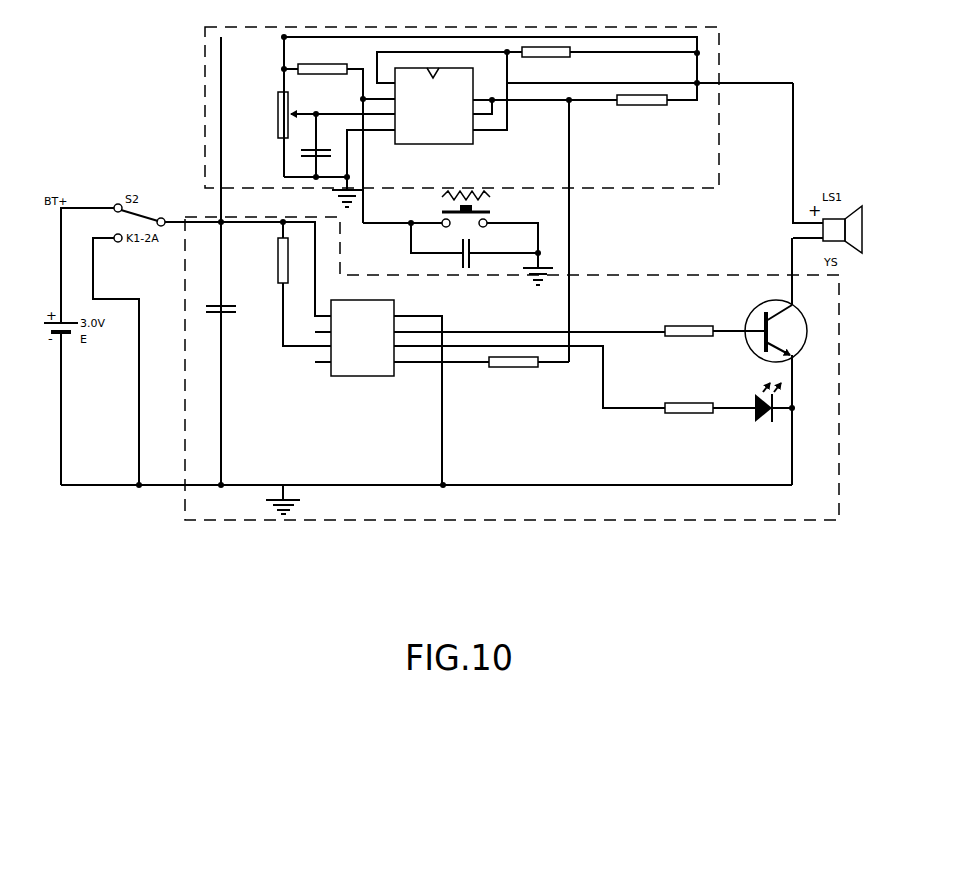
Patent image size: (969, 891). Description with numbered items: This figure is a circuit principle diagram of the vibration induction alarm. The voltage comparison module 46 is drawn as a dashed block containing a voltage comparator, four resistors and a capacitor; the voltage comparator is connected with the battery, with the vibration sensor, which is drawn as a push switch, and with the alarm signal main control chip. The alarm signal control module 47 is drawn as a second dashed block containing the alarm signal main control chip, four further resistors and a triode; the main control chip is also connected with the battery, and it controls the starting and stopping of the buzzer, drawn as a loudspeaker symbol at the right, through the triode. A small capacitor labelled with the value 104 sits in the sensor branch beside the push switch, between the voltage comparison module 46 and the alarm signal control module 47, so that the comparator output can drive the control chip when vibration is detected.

The voltage comparison module 46 is at (720, 68).
The alarm signal control module 47 is at (685, 520).
The capacitor C2 value 104 is at (456, 261).